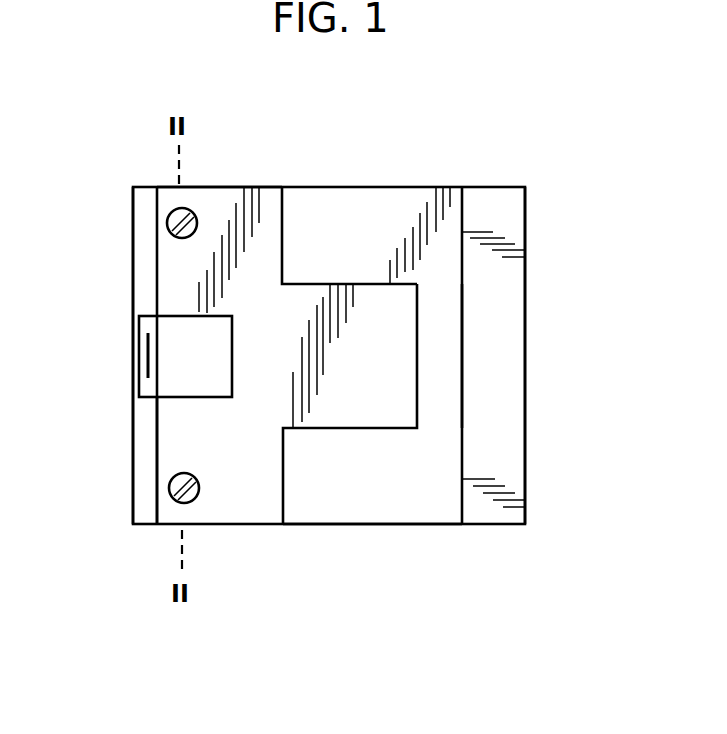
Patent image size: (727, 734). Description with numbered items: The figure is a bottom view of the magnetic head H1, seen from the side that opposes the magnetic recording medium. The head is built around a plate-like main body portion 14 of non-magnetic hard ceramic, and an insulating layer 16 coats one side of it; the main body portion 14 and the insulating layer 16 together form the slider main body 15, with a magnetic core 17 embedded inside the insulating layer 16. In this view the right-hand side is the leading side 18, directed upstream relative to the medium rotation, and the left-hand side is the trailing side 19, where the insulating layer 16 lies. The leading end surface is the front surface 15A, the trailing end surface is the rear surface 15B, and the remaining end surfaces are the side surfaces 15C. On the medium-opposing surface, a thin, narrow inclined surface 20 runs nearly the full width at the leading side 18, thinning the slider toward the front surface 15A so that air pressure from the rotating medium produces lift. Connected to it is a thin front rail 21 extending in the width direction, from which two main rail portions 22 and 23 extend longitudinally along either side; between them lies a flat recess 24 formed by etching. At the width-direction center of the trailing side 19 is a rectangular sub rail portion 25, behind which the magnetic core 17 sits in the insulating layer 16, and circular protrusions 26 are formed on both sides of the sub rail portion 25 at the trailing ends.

The main body portion 14 is at (296, 549).
The slider main body 15 is at (226, 202).
The front surface 15A is at (525, 220).
The rear surface 15B is at (133, 493).
The side surfaces 15C is at (276, 200).
The insulating layer 16 is at (140, 237).
The magnetic core 17 is at (140, 368).
The leading side 18 is at (525, 302).
The trailing side 19 is at (173, 447).
The inclined surface 20 is at (500, 470).
The front rail 21 is at (438, 370).
The main rail portion 22 is at (390, 202).
The main rail portion 23 is at (394, 489).
The recess 24 is at (355, 407).
The sub rail portion 25 is at (183, 325).
The protrusions 26 is at (200, 488).
The magnetic head H1 is at (470, 171).